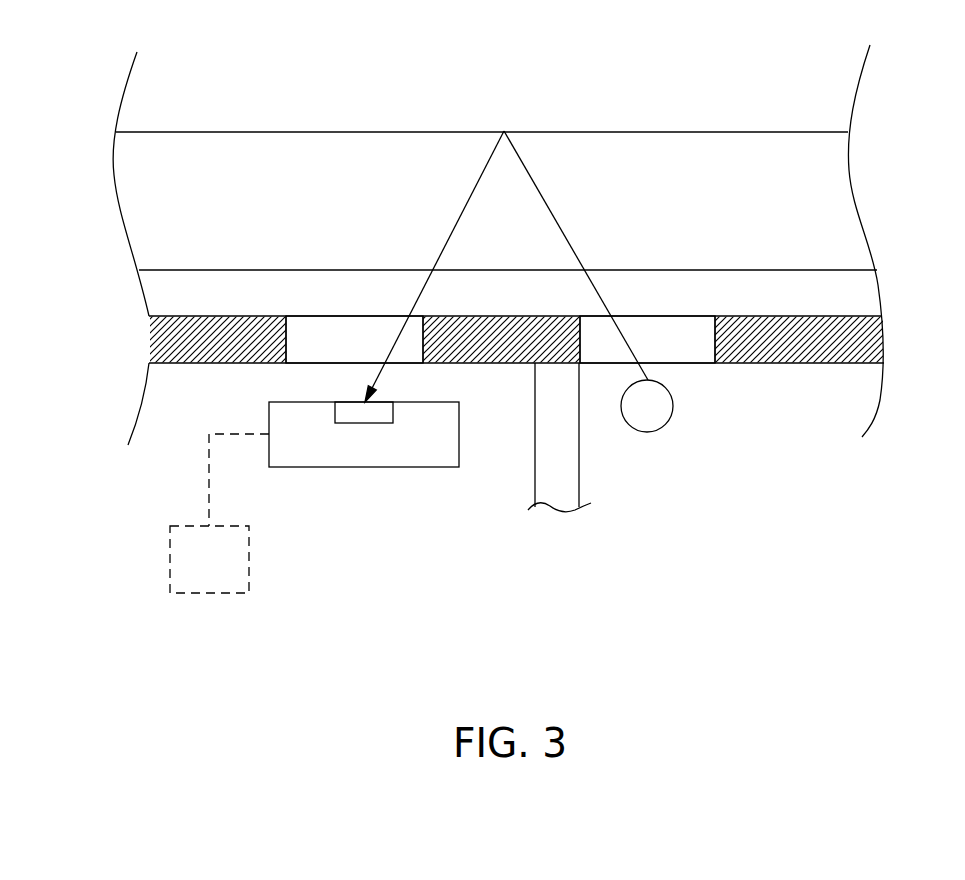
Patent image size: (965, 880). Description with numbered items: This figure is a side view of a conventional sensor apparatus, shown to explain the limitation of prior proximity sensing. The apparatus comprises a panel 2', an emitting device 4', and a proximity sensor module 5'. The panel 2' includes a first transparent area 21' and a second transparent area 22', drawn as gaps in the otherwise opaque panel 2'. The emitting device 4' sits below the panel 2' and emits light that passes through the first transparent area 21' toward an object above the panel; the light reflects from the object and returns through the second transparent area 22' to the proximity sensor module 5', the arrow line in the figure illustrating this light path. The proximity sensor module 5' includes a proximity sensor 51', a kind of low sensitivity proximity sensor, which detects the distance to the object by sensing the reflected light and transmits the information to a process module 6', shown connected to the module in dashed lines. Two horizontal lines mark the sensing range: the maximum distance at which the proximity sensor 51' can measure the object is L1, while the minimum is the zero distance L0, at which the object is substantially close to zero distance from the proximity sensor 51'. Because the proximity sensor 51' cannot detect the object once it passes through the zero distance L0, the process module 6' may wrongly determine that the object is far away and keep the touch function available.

The second transparent area 22' is at (354, 281).
The first transparent area 21' is at (647, 281).
The panel 2' is at (799, 280).
The emitting device 4' is at (670, 455).
The proximity sensor module 5' is at (364, 506).
The proximity sensor 51' is at (401, 493).
The process module 6' is at (168, 521).
The maximum distance L1 is at (524, 126).
The zero distance L0 is at (537, 264).